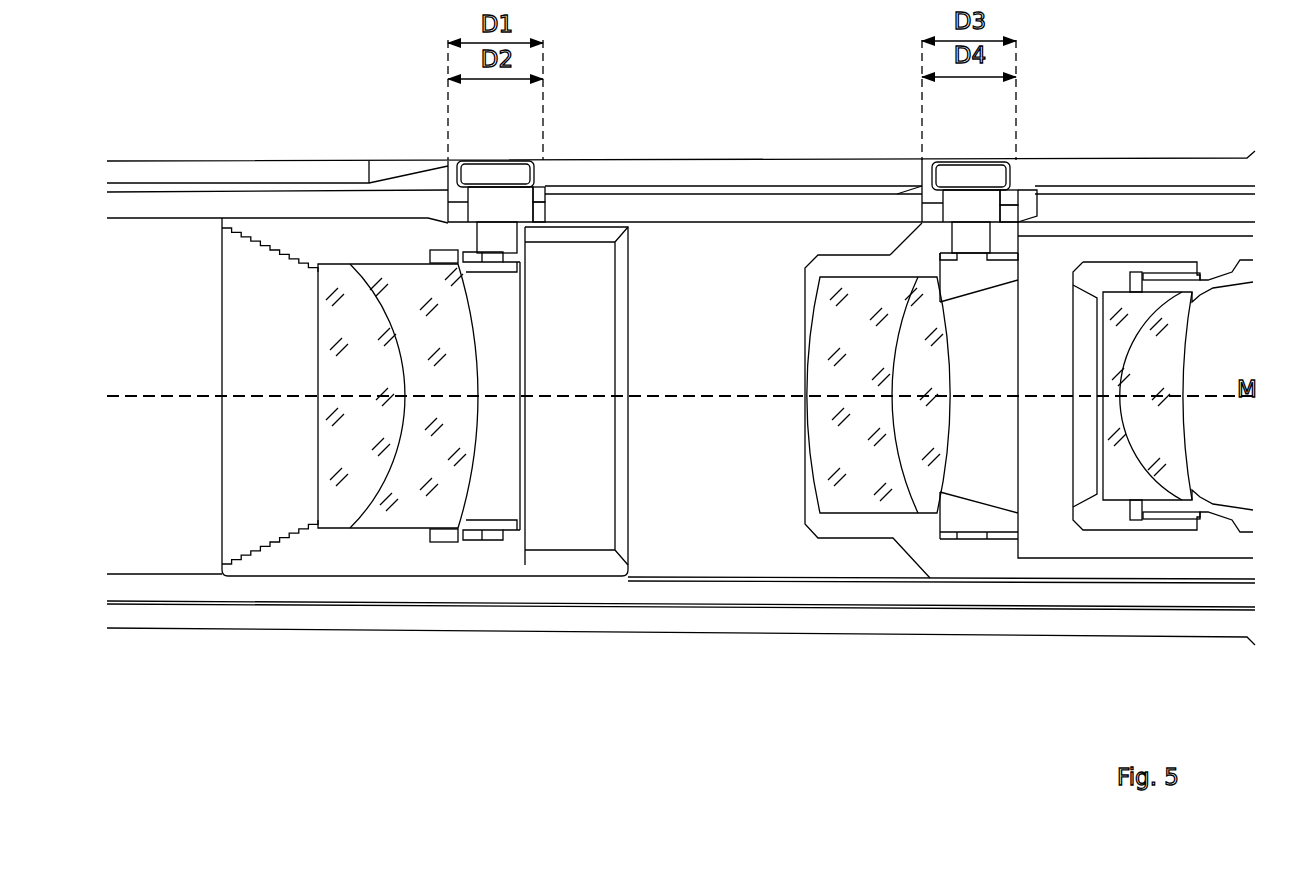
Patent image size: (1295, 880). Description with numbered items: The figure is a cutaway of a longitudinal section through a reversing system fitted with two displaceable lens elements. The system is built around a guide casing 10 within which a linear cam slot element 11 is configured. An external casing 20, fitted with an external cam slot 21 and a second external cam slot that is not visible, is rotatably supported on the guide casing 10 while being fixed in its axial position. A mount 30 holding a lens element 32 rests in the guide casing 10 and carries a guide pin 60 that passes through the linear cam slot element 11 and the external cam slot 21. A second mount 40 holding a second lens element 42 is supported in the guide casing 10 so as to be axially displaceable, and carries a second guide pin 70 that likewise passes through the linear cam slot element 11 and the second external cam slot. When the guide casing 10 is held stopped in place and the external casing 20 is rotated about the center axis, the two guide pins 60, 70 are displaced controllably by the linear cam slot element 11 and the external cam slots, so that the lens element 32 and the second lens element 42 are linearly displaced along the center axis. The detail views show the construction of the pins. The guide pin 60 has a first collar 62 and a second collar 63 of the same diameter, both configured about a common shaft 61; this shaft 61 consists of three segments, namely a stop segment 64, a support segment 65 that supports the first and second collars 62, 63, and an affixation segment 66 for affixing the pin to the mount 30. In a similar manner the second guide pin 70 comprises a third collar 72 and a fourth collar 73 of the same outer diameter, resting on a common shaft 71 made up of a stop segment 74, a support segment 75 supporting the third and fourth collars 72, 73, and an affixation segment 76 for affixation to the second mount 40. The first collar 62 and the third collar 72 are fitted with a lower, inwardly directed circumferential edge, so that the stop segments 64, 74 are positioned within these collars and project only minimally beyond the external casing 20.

The guide casing 10 is at (1232, 212).
The linear cam slot element 11 is at (733, 215).
The external casing 20 is at (1200, 176).
The external cam slot 21 is at (430, 186).
The mount 30 is at (323, 548).
The lens element 32 is at (417, 482).
The second mount 40 is at (993, 548).
The second lens element 42 is at (928, 482).
The guide pin 60 is at (483, 159).
The shaft 61 is at (484, 186).
The first collar 62 is at (539, 195).
The second collar 63 is at (534, 218).
The stop segment 64 is at (500, 176).
The support segment 65 is at (515, 206).
The affixation segment 66 is at (501, 243).
The second guide pin 70 is at (957, 159).
The shaft 71 is at (958, 186).
The third collar 72 is at (1016, 195).
The fourth collar 73 is at (1011, 218).
The stop segment 74 is at (972, 177).
The support segment 75 is at (988, 206).
The affixation segment 76 is at (976, 243).